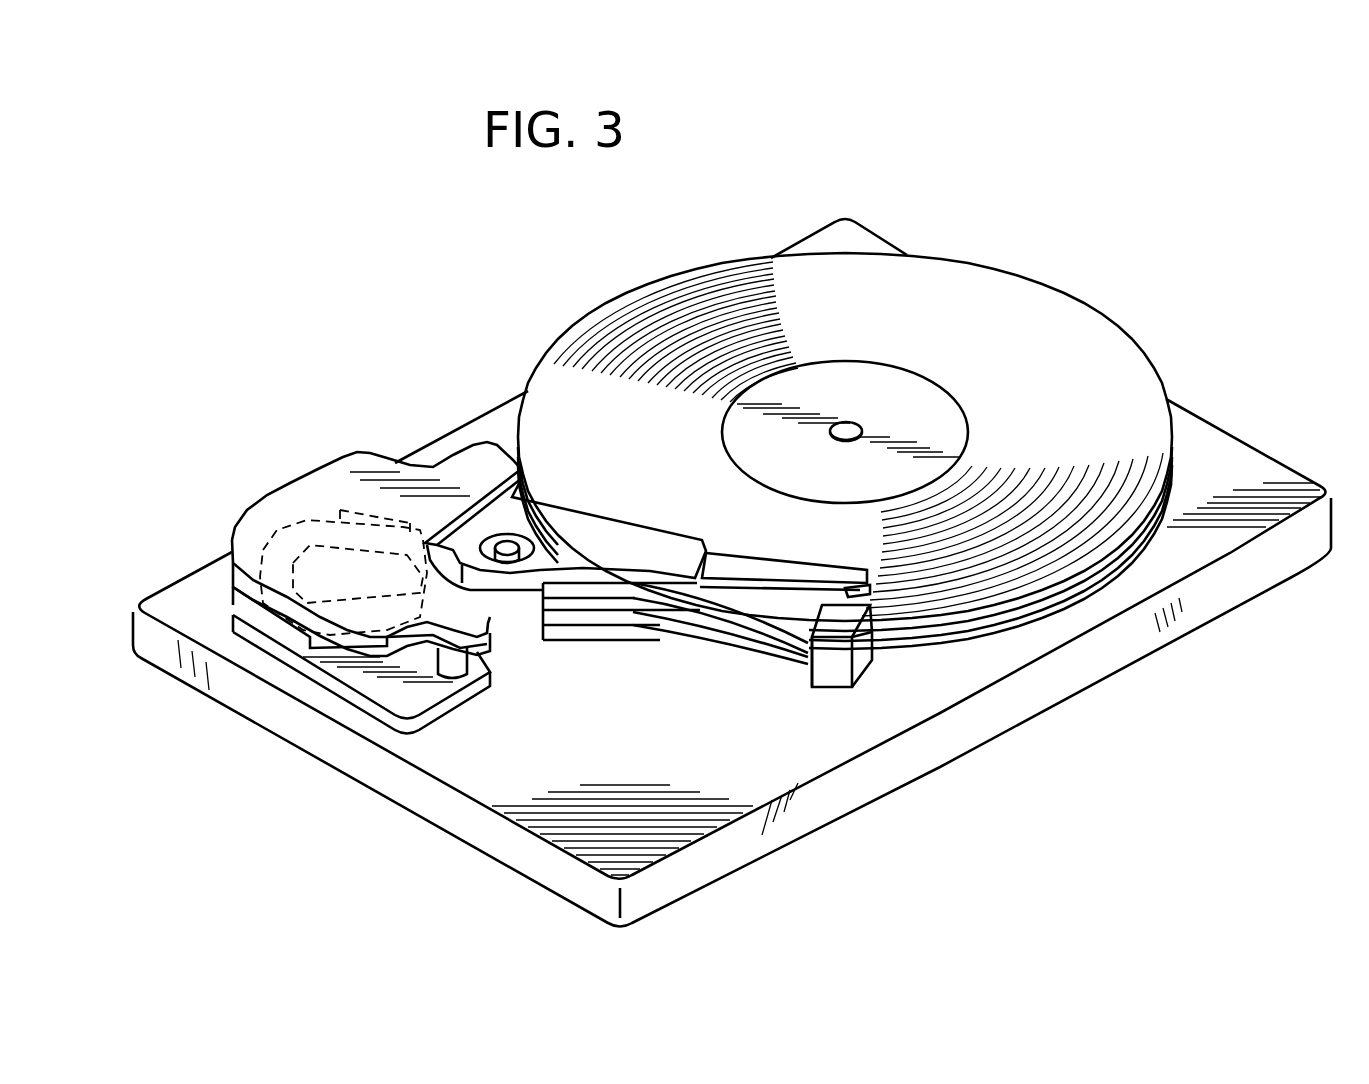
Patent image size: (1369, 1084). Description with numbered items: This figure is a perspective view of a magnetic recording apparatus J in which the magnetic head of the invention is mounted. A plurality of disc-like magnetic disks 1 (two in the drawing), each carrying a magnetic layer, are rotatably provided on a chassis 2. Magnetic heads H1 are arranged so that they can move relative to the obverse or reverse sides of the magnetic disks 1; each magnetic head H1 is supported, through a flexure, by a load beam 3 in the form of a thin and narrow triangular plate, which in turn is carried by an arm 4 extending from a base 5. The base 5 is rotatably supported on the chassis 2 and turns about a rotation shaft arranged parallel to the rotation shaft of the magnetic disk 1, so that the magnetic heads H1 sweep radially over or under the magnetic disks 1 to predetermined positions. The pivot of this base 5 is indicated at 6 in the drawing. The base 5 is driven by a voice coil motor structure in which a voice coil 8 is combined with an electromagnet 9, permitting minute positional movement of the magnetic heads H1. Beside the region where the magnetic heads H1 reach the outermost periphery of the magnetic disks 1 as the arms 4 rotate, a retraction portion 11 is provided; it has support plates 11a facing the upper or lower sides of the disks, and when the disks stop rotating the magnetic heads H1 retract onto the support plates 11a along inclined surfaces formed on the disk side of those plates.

The magnetic disk 1 is at (987, 305).
The chassis 2 is at (1247, 582).
The load beam 3 is at (740, 568).
The arm 4 is at (580, 573).
The base 5 is at (568, 512).
The pivot shaft 6 is at (505, 562).
The voice coil 8 is at (283, 545).
The electromagnet 9 is at (377, 513).
The retraction portion 11 is at (873, 640).
The support plate 11a is at (837, 623).
The magnetic head H1 is at (868, 578).
The magnetic recording apparatus J is at (1140, 301).